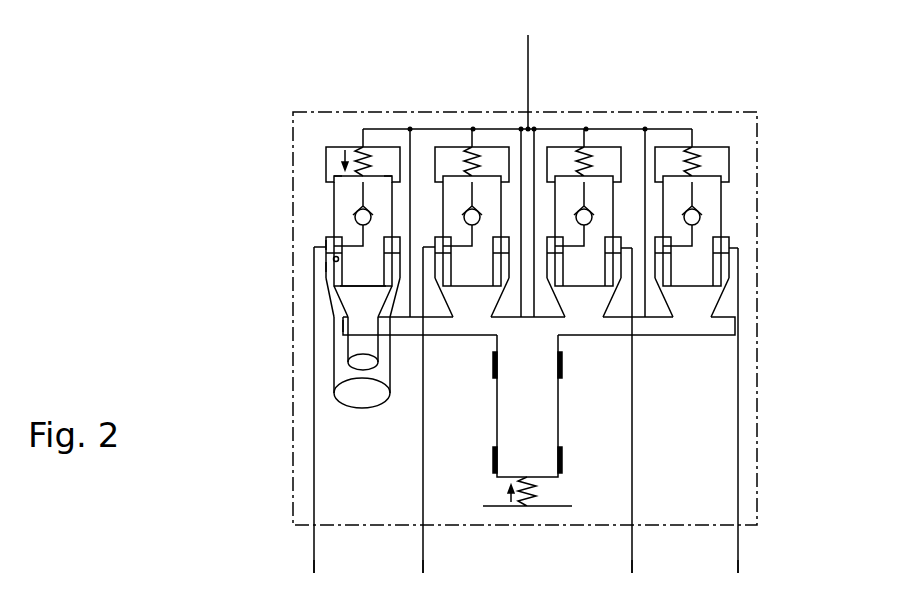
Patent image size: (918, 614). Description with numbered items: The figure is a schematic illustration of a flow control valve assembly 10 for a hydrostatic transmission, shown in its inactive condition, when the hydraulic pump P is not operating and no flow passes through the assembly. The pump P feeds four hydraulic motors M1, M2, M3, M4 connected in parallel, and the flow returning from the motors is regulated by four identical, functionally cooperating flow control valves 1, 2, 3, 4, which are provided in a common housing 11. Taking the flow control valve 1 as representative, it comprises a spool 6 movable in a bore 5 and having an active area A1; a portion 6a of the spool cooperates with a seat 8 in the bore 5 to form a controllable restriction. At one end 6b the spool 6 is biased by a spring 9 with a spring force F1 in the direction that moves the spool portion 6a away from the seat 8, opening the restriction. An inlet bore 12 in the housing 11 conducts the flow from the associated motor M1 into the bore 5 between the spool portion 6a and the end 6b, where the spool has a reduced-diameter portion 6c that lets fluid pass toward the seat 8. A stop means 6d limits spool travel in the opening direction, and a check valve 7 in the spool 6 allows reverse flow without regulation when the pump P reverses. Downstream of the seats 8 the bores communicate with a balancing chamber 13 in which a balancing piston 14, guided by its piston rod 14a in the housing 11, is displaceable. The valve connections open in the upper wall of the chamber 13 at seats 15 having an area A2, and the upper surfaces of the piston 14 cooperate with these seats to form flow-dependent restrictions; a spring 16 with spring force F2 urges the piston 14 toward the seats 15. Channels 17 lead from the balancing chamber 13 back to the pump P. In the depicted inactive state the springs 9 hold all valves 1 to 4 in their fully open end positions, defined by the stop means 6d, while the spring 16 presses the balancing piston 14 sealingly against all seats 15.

The flow control valve 1 is at (315, 202).
The flow control valve 2 is at (443, 210).
The flow control valve 3 is at (616, 210).
The flow control valve 4 is at (724, 214).
The bore 5 is at (333, 259).
The spool 6 is at (333, 195).
The spool portion 6a is at (357, 282).
The spool end 6b is at (342, 173).
The reduced-diameter portion 6c is at (325, 243).
The stop means 6d is at (384, 178).
The check valve 7 is at (350, 221).
The seat 8 is at (313, 267).
The spring 9 is at (358, 173).
The flow control valve assembly 10 is at (768, 230).
The housing 11 is at (722, 433).
The inlet bore 12 is at (313, 468).
The balancing chamber 13 is at (690, 328).
The balancing piston 14 is at (688, 338).
The piston rod 14a is at (560, 428).
The seats 15 is at (343, 319).
The spring 16 is at (530, 492).
The channel 17 is at (545, 130).
The active area A1 is at (365, 395).
The seat area A2 is at (360, 364).
The spring force F1 is at (343, 150).
The spring force F2 is at (508, 498).
The hydraulic pump P is at (540, 81).
The hydraulic motor M1 is at (332, 566).
The hydraulic motor M2 is at (441, 566).
The hydraulic motor M3 is at (651, 566).
The hydraulic motor M4 is at (756, 566).